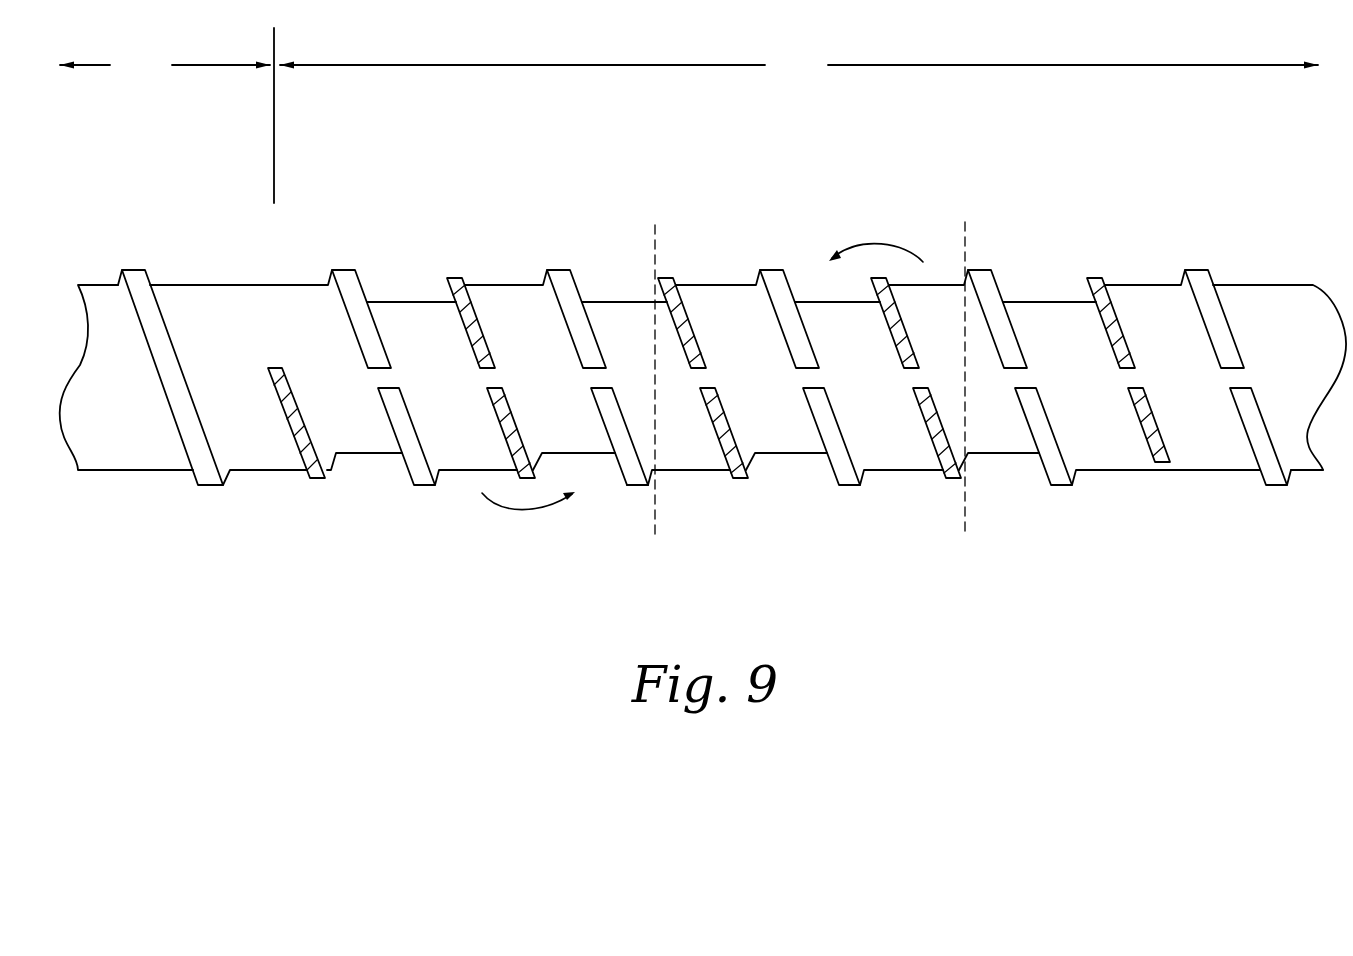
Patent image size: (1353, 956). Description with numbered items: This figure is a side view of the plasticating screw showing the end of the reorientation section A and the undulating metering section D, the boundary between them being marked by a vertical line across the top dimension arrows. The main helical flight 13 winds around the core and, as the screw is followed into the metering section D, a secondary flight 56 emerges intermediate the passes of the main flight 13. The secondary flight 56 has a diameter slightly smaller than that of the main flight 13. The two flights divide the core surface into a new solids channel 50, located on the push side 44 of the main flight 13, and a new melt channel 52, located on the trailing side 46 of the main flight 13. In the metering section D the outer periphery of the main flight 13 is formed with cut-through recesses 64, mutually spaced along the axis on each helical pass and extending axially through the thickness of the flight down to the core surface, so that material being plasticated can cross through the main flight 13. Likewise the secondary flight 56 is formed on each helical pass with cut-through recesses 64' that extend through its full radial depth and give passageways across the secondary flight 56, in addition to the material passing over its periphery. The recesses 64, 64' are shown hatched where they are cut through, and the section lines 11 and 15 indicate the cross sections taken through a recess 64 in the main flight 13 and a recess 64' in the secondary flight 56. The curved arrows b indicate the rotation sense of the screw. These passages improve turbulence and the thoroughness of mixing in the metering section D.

The main helical flight 13 is at (160, 317).
The cut-through recess 64 is at (759, 291).
The cut-through recess 64' is at (719, 394).
The melt channel 52 is at (503, 285).
The secondary flight 56 is at (867, 287).
The trailing side 46 is at (622, 470).
The push side 44 is at (652, 483).
The solids channel 50 is at (715, 472).
The section line 11 is at (597, 243).
The section line 15 is at (903, 243).
The reorientation section A is at (167, 115).
The undulating metering section D is at (799, 65).
The rotation direction b is at (702, 375).